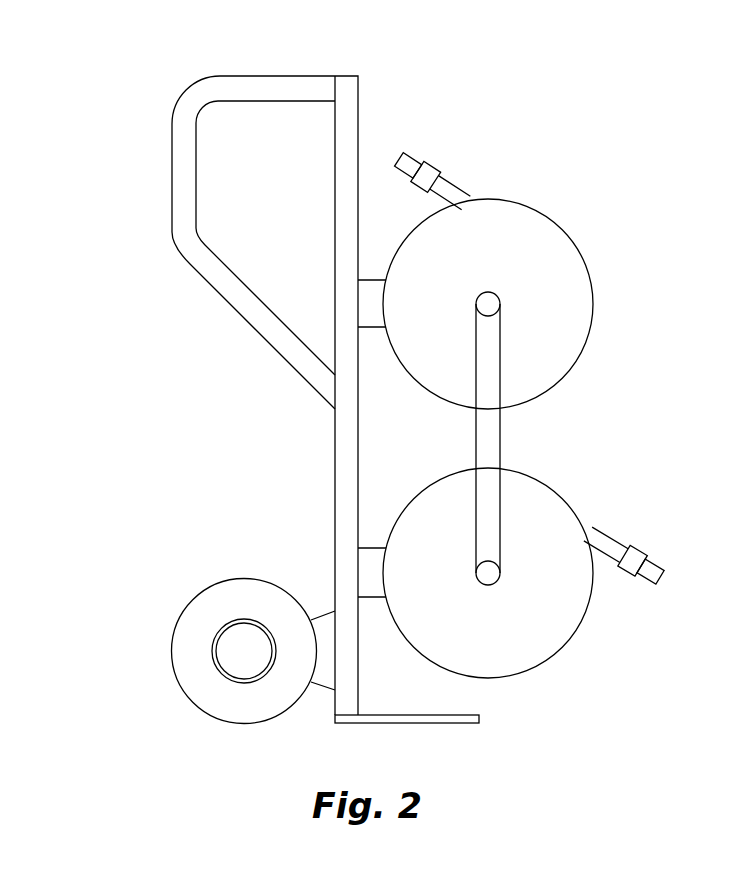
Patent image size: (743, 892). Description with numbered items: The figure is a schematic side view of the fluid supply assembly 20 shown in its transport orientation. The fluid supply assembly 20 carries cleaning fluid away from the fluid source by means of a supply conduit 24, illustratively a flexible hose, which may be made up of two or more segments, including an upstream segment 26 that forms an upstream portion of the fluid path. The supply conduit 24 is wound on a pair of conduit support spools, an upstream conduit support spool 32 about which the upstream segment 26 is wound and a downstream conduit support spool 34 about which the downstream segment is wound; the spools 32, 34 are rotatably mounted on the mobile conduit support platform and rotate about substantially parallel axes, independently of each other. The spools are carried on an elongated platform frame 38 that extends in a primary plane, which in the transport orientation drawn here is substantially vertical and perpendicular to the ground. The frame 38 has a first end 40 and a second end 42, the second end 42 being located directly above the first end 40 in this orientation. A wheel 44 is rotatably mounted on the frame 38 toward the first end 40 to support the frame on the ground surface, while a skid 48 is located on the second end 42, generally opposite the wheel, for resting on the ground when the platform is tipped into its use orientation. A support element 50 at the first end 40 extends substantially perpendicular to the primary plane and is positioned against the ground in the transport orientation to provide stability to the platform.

The fluid supply assembly 20 is at (585, 196).
The supply conduit 24 is at (425, 163).
The upstream segment 26 is at (638, 550).
The upstream conduit support spool 32 is at (552, 497).
The downstream conduit support spool 34 is at (573, 267).
The platform frame 38 is at (352, 119).
The first end 40 is at (320, 736).
The second end 42 is at (395, 75).
The wheel 44 is at (202, 603).
The skid 48 is at (185, 170).
The support element 50 is at (442, 722).